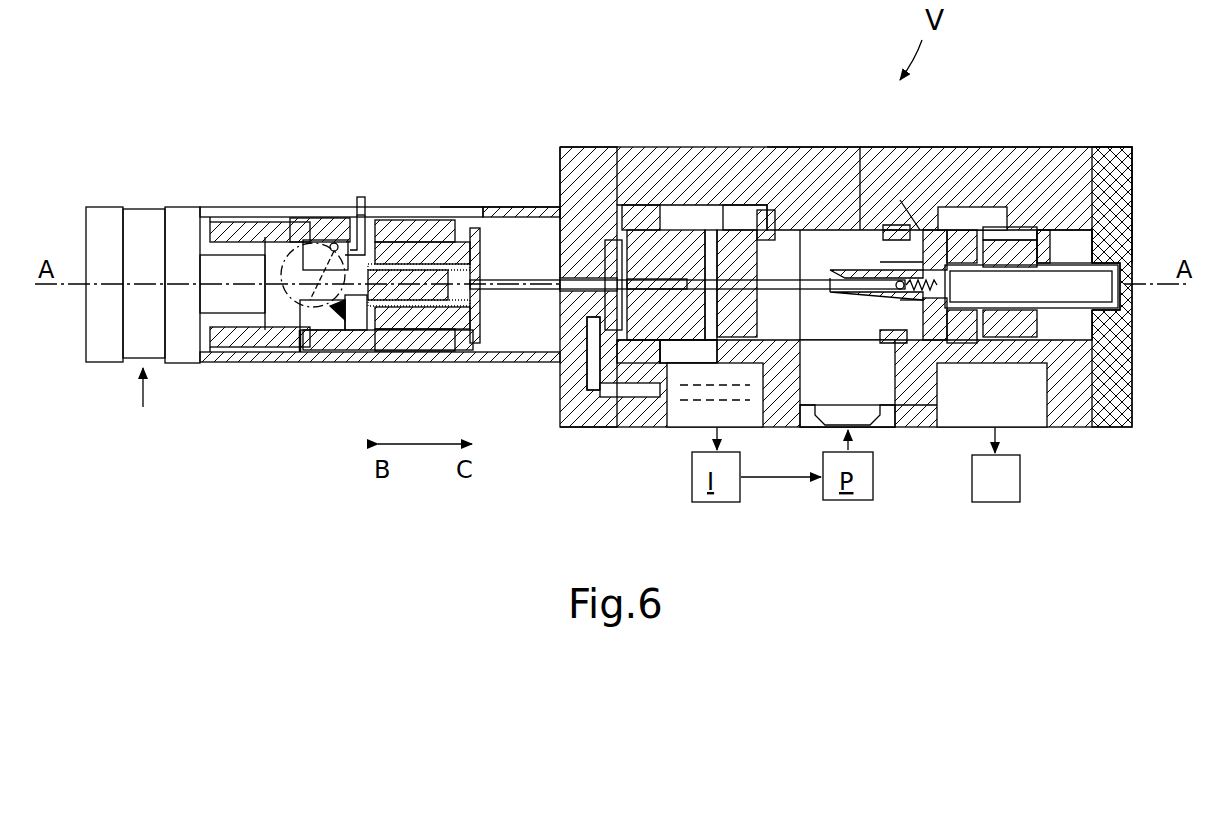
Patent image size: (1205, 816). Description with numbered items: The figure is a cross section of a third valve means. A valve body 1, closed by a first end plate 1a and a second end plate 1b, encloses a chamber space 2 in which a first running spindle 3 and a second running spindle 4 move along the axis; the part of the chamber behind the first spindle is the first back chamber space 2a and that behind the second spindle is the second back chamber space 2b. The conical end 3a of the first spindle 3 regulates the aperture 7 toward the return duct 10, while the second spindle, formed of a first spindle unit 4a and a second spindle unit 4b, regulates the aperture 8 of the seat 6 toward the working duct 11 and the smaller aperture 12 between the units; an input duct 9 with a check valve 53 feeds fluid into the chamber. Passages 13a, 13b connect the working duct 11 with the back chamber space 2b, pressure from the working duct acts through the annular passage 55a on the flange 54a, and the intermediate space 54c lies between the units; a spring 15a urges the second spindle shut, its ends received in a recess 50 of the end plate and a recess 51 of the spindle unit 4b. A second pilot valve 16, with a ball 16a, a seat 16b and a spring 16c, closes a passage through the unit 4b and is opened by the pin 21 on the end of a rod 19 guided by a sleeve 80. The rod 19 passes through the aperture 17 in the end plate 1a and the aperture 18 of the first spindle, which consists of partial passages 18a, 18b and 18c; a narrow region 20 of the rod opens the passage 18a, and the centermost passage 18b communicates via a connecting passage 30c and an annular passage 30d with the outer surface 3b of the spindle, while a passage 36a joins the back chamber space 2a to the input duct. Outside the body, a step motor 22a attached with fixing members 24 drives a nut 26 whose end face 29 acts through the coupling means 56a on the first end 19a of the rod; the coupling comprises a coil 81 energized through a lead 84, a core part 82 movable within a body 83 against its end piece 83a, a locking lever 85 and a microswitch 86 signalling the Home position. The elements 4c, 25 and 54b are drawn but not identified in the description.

The valve body 1 is at (848, 147).
The first end plate 1a is at (588, 147).
The second end plate 1b is at (1105, 147).
The chamber space 2 is at (832, 147).
The first back chamber space 2a is at (560, 160).
The second back chamber space 2b is at (1128, 190).
The first running spindle 3 is at (668, 230).
The conical end 3a is at (757, 200).
The outer surface 3b is at (625, 405).
The second running spindle 4 is at (862, 147).
The first spindle unit 4a is at (590, 400).
The second spindle unit 4b is at (1037, 322).
The passage 4c is at (903, 427).
The seat 6 is at (905, 200).
The aperture 7 is at (778, 215).
The aperture 8 is at (885, 225).
The input duct 9 is at (847, 383).
The return duct 10 is at (715, 395).
The working duct 11 is at (992, 395).
The smaller aperture 12 is at (912, 326).
The passage 13a is at (1042, 235).
The passage 13b is at (1031, 286).
The spring 15a is at (1105, 320).
The second pilot valve 16 is at (917, 258).
The closing member 16a is at (895, 240).
The seat 16b is at (902, 238).
The spring 16c is at (932, 233).
The aperture 17 is at (525, 275).
The aperture 18 is at (557, 318).
The first partial passage 18a is at (625, 233).
The centermost passage 18b is at (630, 268).
The third partial passage 18c is at (745, 238).
The rod 19 is at (805, 220).
The first end of rod 19a is at (488, 280).
The region 20 is at (672, 405).
The pin 21 is at (850, 303).
The step motor 22a is at (145, 220).
The fixing member 24 is at (258, 362).
The piston 25 is at (245, 245).
The nut 26 is at (283, 245).
The end face 29 is at (336, 352).
The connecting passage 30c is at (692, 200).
The annular passage 30d is at (820, 302).
The passage 36a is at (570, 383).
The recess 50 is at (1095, 245).
The recess 51 is at (1025, 270).
The check valve 53 is at (818, 432).
The flange 54a is at (1005, 230).
The sleeve 54b is at (1050, 212).
The intermediate space 54c is at (1023, 465).
The annular passage 55a is at (975, 210).
The coupling means 56a is at (440, 200).
The sleeve 80 is at (884, 260).
The coil 81 is at (398, 235).
The core part 82 is at (428, 340).
The body 83 is at (398, 352).
The end piece 83a is at (492, 345).
The lead 84 is at (357, 200).
The lever 85 is at (320, 242).
The microswitch 86 is at (305, 352).